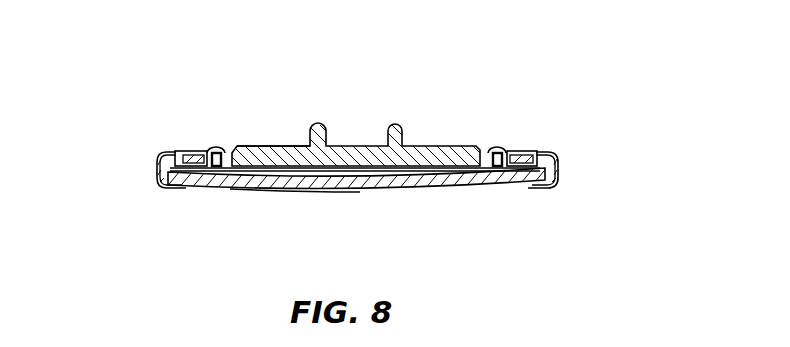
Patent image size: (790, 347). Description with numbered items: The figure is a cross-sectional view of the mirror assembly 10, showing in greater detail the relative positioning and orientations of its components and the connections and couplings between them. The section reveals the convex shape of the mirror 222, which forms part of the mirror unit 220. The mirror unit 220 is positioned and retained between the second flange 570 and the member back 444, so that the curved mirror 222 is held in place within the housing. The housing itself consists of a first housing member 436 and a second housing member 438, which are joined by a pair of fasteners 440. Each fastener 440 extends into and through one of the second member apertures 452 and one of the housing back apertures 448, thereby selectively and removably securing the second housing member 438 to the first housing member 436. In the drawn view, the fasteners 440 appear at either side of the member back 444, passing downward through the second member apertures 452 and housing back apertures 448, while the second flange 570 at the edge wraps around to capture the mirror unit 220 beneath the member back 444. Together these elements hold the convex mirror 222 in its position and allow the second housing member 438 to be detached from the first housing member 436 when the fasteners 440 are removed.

The mirror assembly 10 is at (478, 77).
The first housing member 436 is at (350, 152).
The member back 444 is at (273, 152).
The second member aperture 452 is at (208, 148).
The fastener 440 is at (499, 149).
The housing back aperture 448 is at (181, 155).
The second housing member 438 is at (162, 173).
The second flange 570 is at (529, 188).
The mirror 222 is at (409, 187).
The mirror unit 220 is at (282, 192).